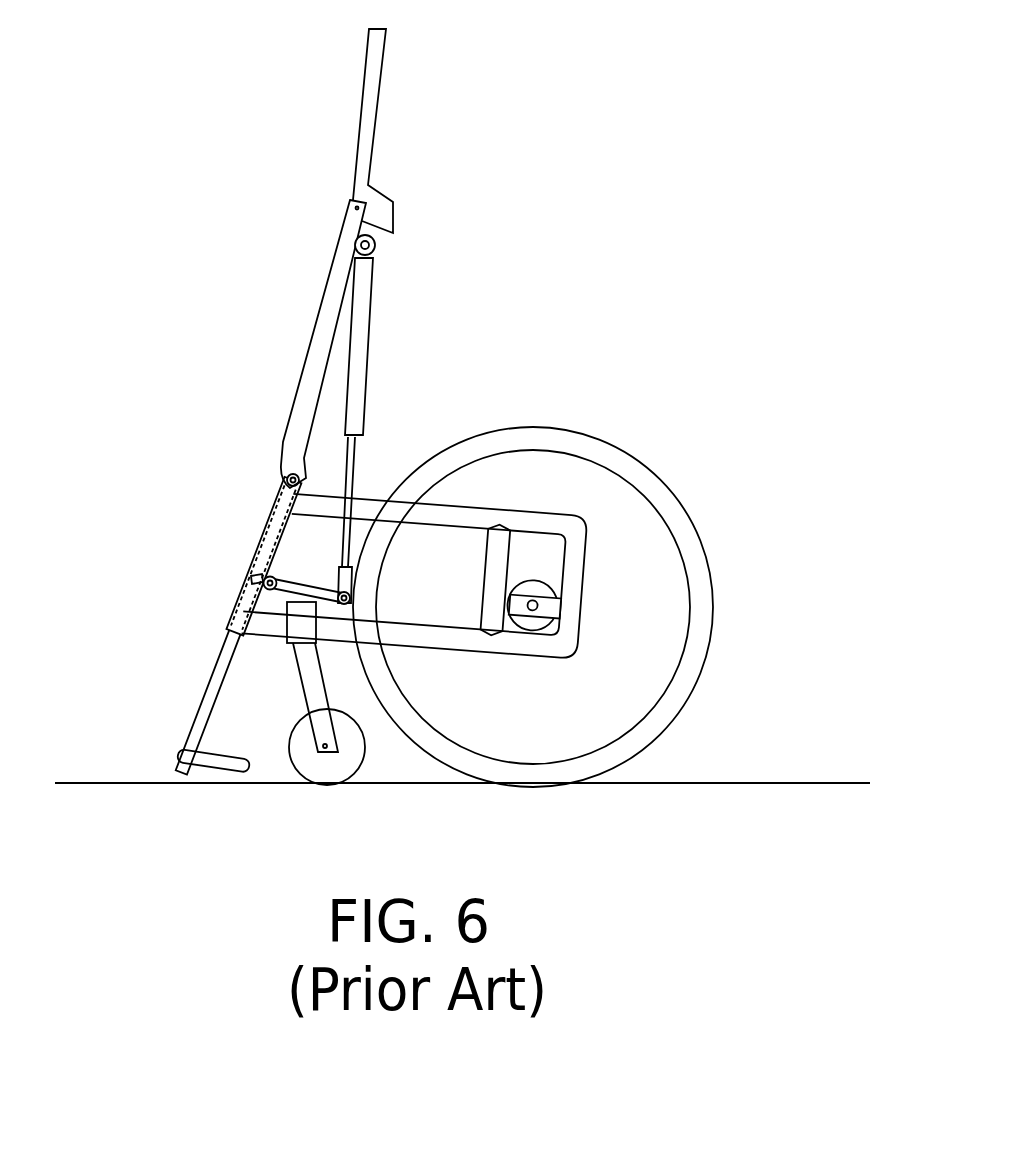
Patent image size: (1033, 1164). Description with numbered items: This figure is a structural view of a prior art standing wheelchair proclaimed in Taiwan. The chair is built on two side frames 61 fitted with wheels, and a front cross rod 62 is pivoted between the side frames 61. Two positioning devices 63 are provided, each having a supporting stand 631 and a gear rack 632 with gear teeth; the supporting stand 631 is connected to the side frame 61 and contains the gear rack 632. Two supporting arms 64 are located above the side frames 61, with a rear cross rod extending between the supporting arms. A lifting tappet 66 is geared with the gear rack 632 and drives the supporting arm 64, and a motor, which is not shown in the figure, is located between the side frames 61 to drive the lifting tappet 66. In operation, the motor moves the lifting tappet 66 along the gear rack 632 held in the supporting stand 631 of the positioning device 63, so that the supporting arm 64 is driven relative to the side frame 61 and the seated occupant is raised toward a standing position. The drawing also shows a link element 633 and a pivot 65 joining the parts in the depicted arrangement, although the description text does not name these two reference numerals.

The side frame 61 is at (540, 510).
The front cross rod 62 is at (357, 507).
The positioning device 63 is at (250, 536).
The supporting stand 631 is at (288, 492).
The gear rack 632 is at (230, 645).
The link rod 633 is at (258, 597).
The supporting arm 64 is at (296, 375).
The pivot 65 is at (376, 246).
The lifting tappet 66 is at (380, 346).